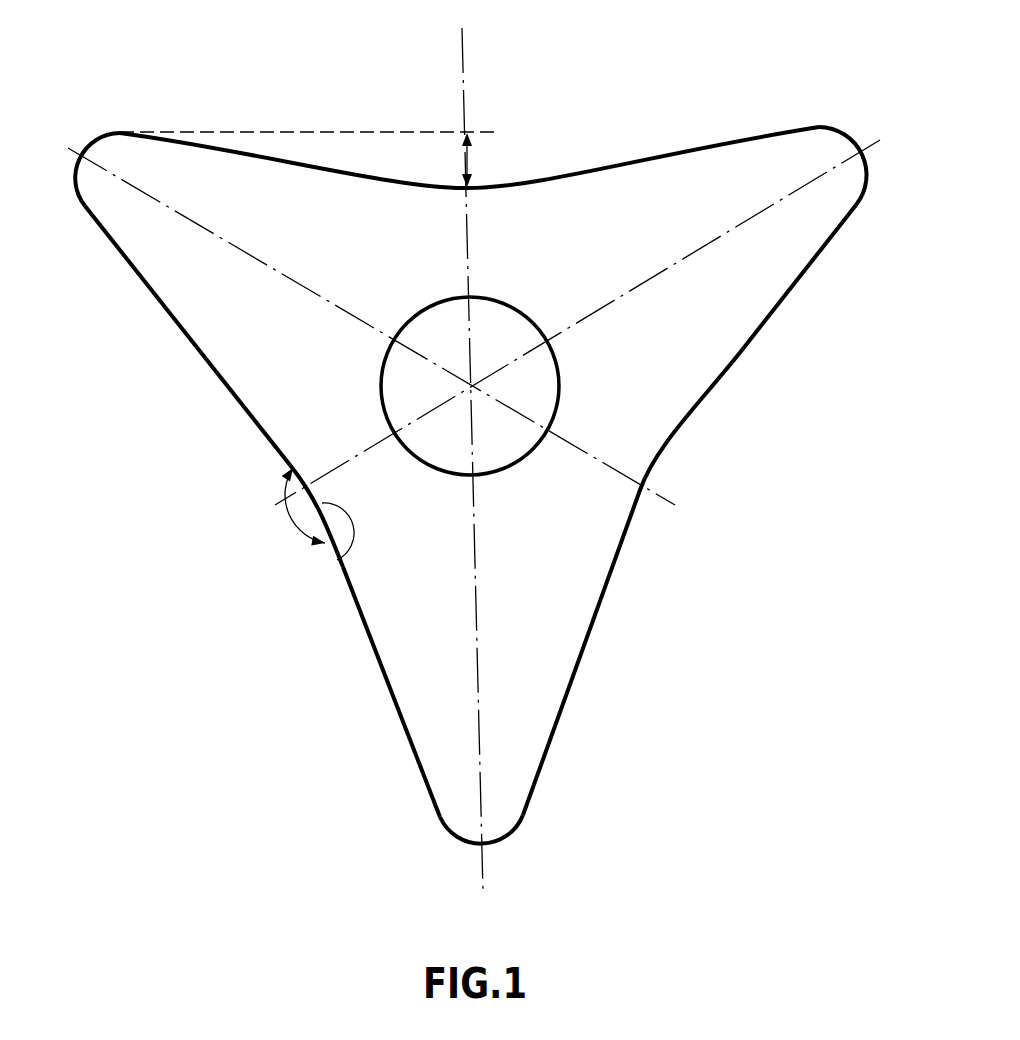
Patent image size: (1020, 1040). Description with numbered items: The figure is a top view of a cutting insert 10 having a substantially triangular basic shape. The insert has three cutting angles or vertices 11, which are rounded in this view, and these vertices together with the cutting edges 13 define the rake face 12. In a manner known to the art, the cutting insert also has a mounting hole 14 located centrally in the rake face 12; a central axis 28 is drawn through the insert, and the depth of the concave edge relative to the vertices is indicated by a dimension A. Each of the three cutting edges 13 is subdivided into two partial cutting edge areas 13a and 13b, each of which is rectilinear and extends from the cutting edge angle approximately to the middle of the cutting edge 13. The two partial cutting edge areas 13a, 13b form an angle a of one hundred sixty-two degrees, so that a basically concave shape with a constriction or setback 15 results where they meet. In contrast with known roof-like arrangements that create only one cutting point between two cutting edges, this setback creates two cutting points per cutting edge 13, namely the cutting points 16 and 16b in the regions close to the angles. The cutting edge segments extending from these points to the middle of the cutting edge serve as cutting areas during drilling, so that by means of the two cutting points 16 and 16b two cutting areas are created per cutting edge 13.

The cutting insert 10 is at (470, 458).
The cutting vertex 11 is at (508, 840).
The rake face 12 is at (671, 229).
The cutting edge 13 is at (614, 155).
The partial cutting edge area 13a is at (390, 702).
The partial cutting edge area 13b is at (195, 347).
The mounting hole 14 is at (525, 398).
The setback 15 is at (338, 560).
The cutting point 16 is at (118, 122).
The cutting point 16b is at (808, 118).
The central axis 28 is at (464, 42).
The concavity depth A is at (470, 160).
The angle a is at (289, 518).